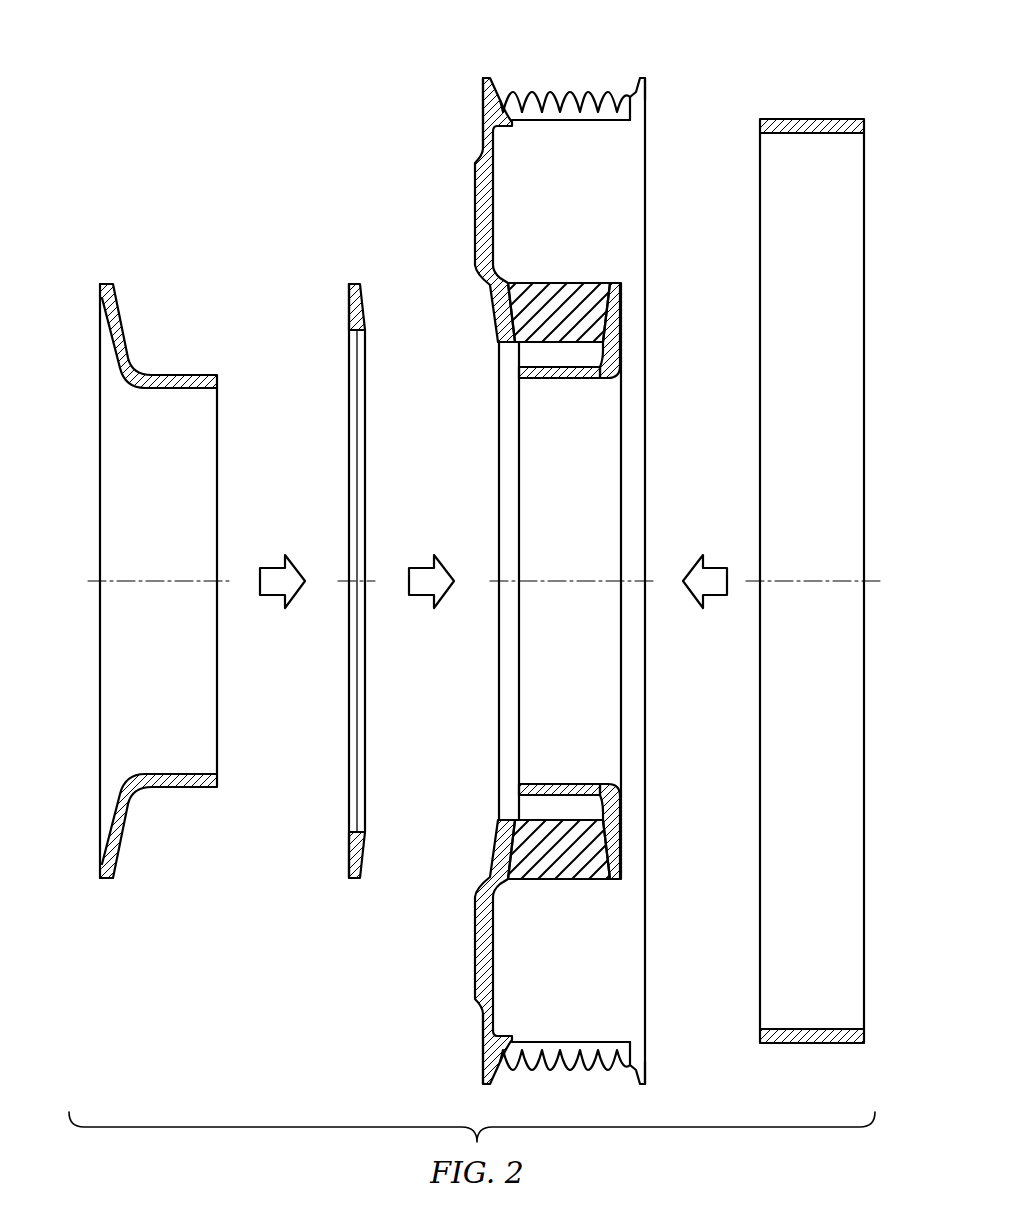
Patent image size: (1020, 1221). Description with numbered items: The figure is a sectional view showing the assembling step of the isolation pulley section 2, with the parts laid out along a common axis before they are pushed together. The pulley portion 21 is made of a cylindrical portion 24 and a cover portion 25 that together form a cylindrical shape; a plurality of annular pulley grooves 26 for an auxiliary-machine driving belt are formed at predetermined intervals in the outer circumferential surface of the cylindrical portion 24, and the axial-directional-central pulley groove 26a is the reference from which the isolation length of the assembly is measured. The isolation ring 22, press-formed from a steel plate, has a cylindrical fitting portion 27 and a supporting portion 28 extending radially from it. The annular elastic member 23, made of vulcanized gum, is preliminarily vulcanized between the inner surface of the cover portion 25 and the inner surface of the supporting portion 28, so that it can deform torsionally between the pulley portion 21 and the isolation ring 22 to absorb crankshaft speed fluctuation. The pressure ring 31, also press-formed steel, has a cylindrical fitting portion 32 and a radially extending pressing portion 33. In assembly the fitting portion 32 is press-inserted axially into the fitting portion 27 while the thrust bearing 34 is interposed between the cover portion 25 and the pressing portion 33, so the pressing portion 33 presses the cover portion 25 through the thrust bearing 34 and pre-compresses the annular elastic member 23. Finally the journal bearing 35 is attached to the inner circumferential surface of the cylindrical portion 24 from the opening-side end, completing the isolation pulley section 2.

The isolation pulley section 2 is at (529, 546).
The pulley portion 21 is at (529, 546).
The isolation ring 22 is at (588, 497).
The annular elastic member 23 is at (551, 302).
The cylindrical portion 24 is at (500, 106).
The cover portion 25 is at (483, 222).
The annular pulley grooves 26 is at (580, 110).
The axial-directional-central pulley groove 26a is at (541, 110).
The cylindrical fitting portion 27 is at (567, 378).
The supporting portion 28 is at (613, 313).
The pressure ring 31 is at (133, 581).
The cylindrical fitting portion 32 is at (178, 374).
The pressing portion 33 is at (118, 358).
The thrust bearing 34 is at (350, 311).
The journal bearing 35 is at (812, 128).